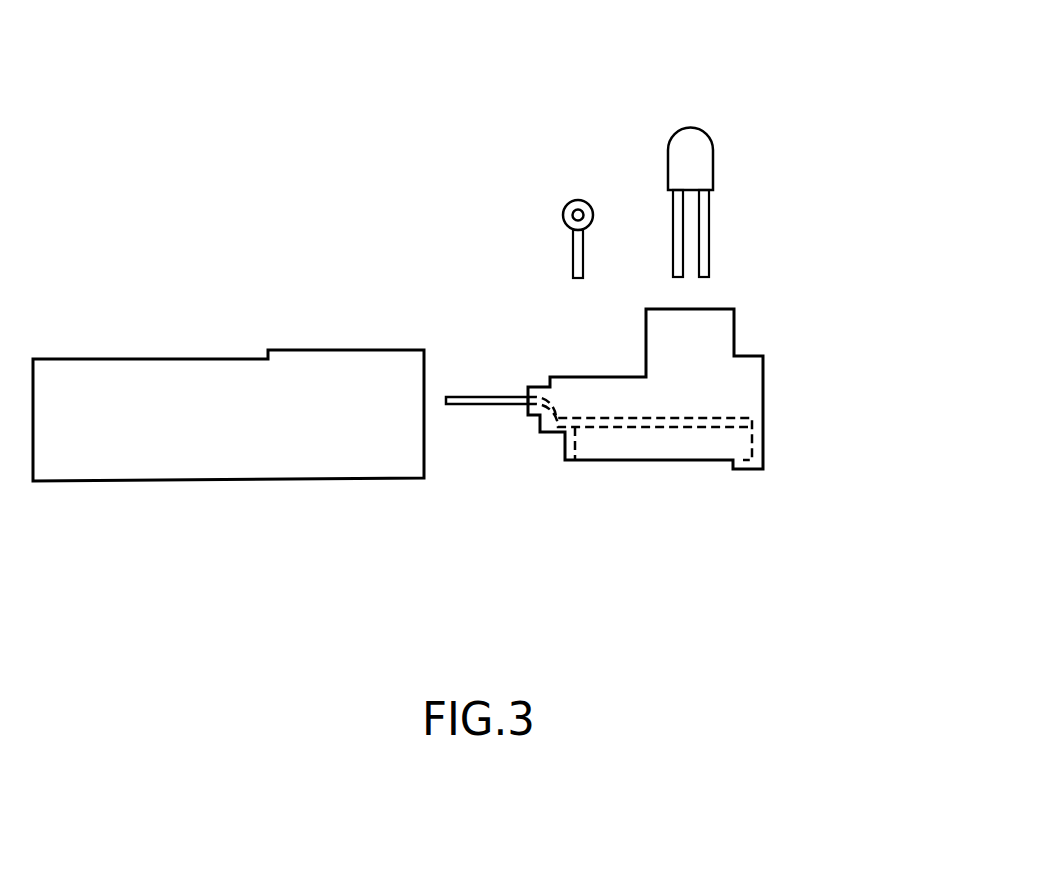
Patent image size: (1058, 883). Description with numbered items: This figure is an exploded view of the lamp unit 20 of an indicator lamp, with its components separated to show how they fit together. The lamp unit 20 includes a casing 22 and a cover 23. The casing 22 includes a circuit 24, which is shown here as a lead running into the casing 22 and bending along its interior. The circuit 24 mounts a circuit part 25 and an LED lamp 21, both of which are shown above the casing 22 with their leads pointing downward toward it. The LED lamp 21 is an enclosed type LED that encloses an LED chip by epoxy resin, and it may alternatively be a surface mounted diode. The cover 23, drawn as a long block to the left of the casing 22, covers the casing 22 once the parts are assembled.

The lamp unit 20 is at (790, 68).
The LED lamp 21 is at (705, 137).
The casing 22 is at (777, 365).
The cover 23 is at (203, 352).
The circuit 24 is at (620, 427).
The circuit part 25 is at (568, 200).